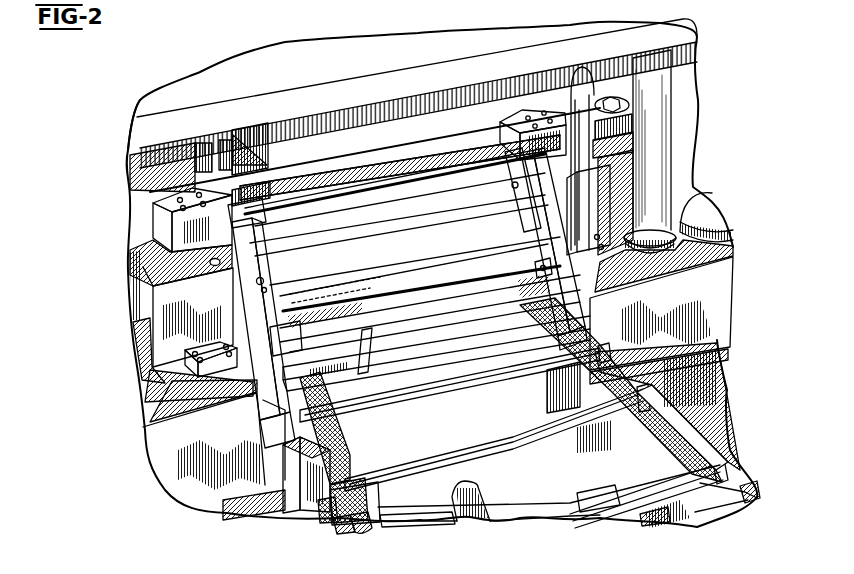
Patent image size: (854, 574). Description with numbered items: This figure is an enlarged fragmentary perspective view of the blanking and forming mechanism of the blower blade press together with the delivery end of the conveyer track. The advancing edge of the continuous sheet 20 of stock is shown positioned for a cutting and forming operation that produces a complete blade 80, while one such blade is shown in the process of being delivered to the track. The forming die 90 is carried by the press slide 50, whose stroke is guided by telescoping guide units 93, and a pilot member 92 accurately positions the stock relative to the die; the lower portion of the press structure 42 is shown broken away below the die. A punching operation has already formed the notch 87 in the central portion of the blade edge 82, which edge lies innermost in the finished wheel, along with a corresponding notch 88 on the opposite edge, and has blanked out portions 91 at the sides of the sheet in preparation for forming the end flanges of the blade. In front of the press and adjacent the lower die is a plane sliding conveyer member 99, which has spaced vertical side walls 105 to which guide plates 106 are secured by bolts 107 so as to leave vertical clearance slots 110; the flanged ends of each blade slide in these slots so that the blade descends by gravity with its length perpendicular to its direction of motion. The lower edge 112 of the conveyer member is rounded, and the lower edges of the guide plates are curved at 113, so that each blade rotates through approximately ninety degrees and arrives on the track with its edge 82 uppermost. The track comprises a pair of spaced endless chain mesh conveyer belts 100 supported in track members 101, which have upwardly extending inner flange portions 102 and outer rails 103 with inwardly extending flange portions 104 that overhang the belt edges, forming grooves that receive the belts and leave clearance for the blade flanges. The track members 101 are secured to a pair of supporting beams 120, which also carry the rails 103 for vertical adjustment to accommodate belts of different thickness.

The sheet 20 is at (400, 167).
The base frame 42 is at (157, 458).
The press slide 50 is at (137, 128).
The blade 80 is at (463, 258).
The blade edge 82 is at (428, 378).
The notch 87 is at (402, 262).
The notch 88 is at (398, 213).
The forming die 90 is at (227, 143).
The blanked out portions 91 is at (498, 140).
The pilot member 92 is at (187, 153).
The telescoping guide units 93 is at (662, 143).
The conveyer member 99 is at (258, 277).
The conveyer belts 100 is at (377, 493).
The track members 101 is at (358, 537).
The flange portions 102 is at (402, 525).
The outer rails 103 is at (325, 530).
The flange portions 104 is at (335, 537).
The side walls 105 is at (623, 270).
The guide plates 106 is at (513, 184).
The bolts 107 is at (290, 240).
The vertical clearance slots 110 is at (123, 338).
The lower edge 112 is at (367, 332).
The curved lower edges 113 is at (533, 268).
The supporting beams 120 is at (657, 523).